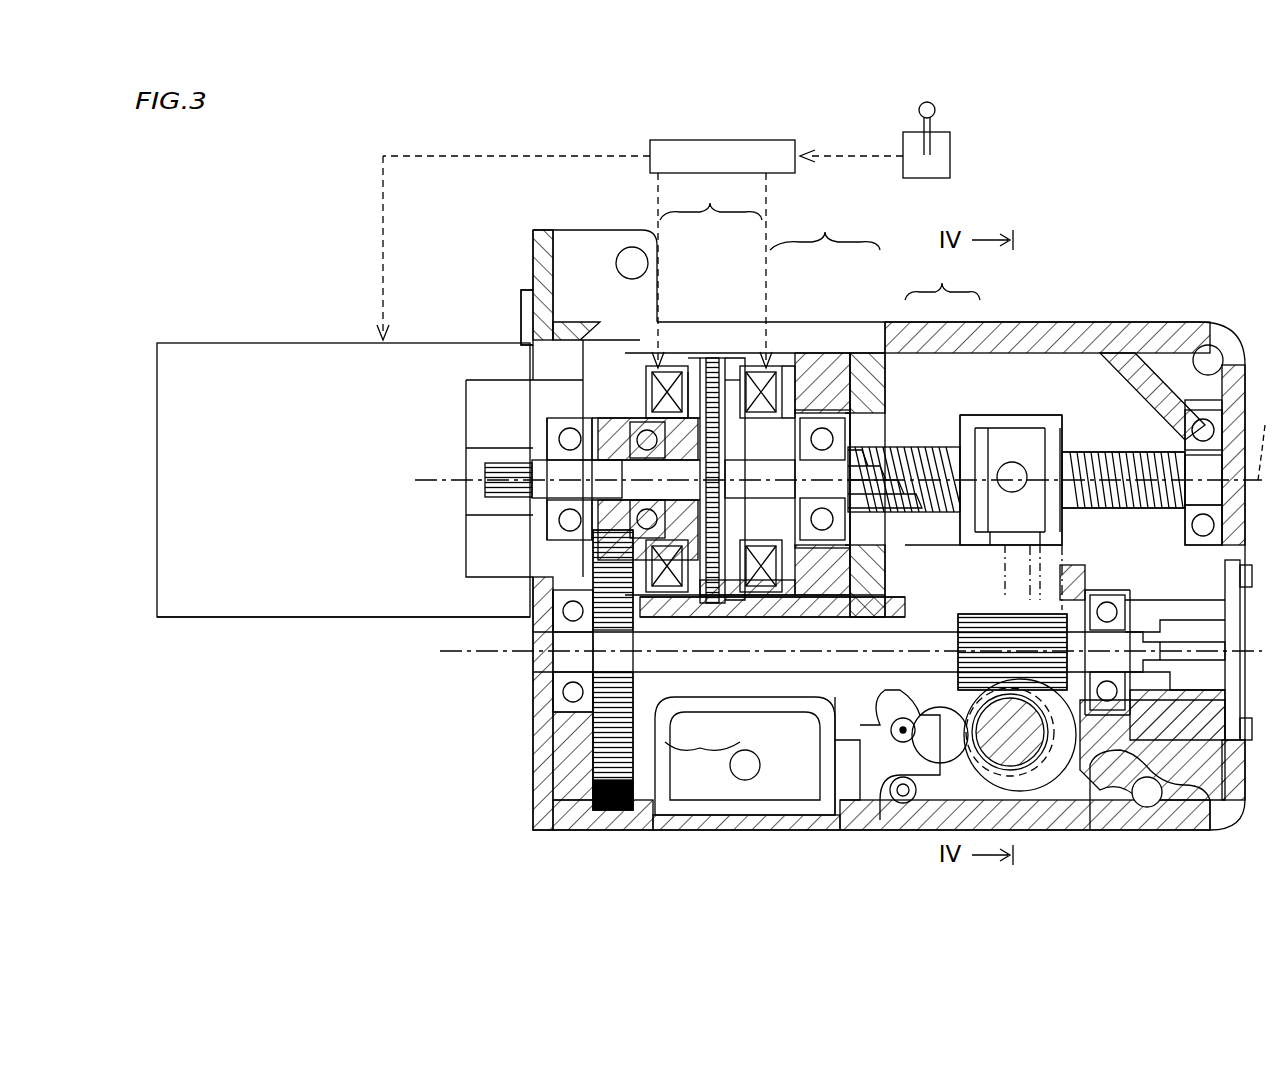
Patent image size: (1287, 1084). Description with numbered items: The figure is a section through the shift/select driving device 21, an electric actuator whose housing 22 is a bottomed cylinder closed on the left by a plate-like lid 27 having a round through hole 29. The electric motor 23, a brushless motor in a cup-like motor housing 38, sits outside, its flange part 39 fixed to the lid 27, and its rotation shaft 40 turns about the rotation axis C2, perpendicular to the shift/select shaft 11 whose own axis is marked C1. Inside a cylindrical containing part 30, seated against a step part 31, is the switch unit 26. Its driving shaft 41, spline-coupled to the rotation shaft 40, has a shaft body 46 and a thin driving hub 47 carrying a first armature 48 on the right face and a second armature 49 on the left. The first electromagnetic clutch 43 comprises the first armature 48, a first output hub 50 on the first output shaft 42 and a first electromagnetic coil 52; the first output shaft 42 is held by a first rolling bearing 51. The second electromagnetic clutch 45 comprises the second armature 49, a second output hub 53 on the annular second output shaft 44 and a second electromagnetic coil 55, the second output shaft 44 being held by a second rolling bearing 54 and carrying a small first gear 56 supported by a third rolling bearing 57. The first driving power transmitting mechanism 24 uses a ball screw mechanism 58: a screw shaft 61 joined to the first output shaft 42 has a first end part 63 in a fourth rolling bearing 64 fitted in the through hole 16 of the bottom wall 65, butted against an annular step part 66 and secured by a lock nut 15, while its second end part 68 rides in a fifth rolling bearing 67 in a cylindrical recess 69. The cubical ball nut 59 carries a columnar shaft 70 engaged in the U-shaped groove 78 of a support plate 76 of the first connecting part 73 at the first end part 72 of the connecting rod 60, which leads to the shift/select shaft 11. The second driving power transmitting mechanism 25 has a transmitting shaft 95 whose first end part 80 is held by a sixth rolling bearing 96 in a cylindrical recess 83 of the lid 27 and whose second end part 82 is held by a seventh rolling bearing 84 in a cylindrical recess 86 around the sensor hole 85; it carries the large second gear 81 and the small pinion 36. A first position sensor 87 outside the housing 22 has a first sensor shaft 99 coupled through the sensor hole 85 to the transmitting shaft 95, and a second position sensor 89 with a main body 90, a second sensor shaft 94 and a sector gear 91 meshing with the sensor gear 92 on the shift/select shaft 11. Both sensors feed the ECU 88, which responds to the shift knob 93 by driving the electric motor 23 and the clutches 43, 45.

The shift/select shaft 11 is at (1015, 740).
The lock nut 15 is at (1005, 545).
The through hole 16 is at (820, 360).
The shift/select driving device 21 is at (1195, 310).
The housing 22 is at (1025, 345).
The electric motor 23 is at (285, 617).
The first driving power transmitting mechanism 24 is at (1065, 355).
The second driving power transmitting mechanism 25 is at (816, 698).
The switch unit 26 is at (880, 350).
The lid 27 is at (540, 790).
The through hole 29 is at (545, 572).
The containing part 30 is at (795, 645).
The step part 31 is at (830, 355).
The pinion 36 is at (1100, 760).
The motor housing 38 is at (335, 617).
The flange part 39 is at (525, 320).
The rotation shaft 40 is at (485, 455).
The driving shaft 41 is at (702, 758).
The first output shaft 42 is at (830, 580).
The first electromagnetic clutch 43 is at (825, 233).
The second output shaft 44 is at (650, 388).
The second electromagnetic clutch 45 is at (711, 197).
The shaft body 46 is at (700, 560).
The driving hub 47 is at (745, 580).
The first armature 48 is at (760, 372).
The second armature 49 is at (720, 390).
The first output hub 50 is at (775, 380).
The first rolling bearing 51 is at (835, 510).
The first electromagnetic coil 52 is at (790, 385).
The second output hub 53 is at (690, 380).
The second rolling bearing 54 is at (660, 430).
The second electromagnetic coil 55 is at (660, 365).
The first gear 56 is at (610, 556).
The third rolling bearing 57 is at (560, 512).
The ball screw mechanism 58 is at (942, 279).
The ball nut 59 is at (975, 425).
The connecting rod 60 is at (1030, 560).
The screw shaft 61 is at (895, 450).
The first end part 63 is at (855, 470).
The fourth rolling bearing 64 is at (864, 410).
The bottom wall 65 is at (895, 600).
The annular step part 66 is at (1000, 530).
The fifth rolling bearing 67 is at (1210, 530).
The second end part 68 is at (1200, 490).
The cylindrical recess 69 is at (1200, 410).
The columnar shaft 70 is at (1015, 460).
The first end part 72 is at (1005, 535).
The first connecting part 73 is at (1002, 488).
The support plate 76 is at (980, 435).
The U-shaped groove 78 is at (1060, 470).
The first end part 80 is at (560, 675).
The second gear 81 is at (628, 775).
The second end part 82 is at (1195, 608).
The cylindrical recess 83 is at (560, 610).
The seventh rolling bearing 84 is at (1200, 712).
The sensor hole 85 is at (1195, 660).
The cylindrical recess 86 is at (1205, 700).
The first position sensor 87 is at (1215, 640).
The ECU 88 is at (742, 140).
The second position sensor 89 is at (852, 806).
The main body 90 is at (850, 760).
The sector gear 91 is at (929, 734).
The sensor gear 92 is at (1010, 780).
The shift knob 93 is at (936, 108).
The second sensor shaft 94 is at (910, 800).
The transmitting shaft 95 is at (790, 700).
The sixth rolling bearing 96 is at (575, 707).
The first sensor shaft 99 is at (1215, 615).
The output shaft axis C1 is at (1065, 790).
The rotation axis C2 is at (1265, 443).